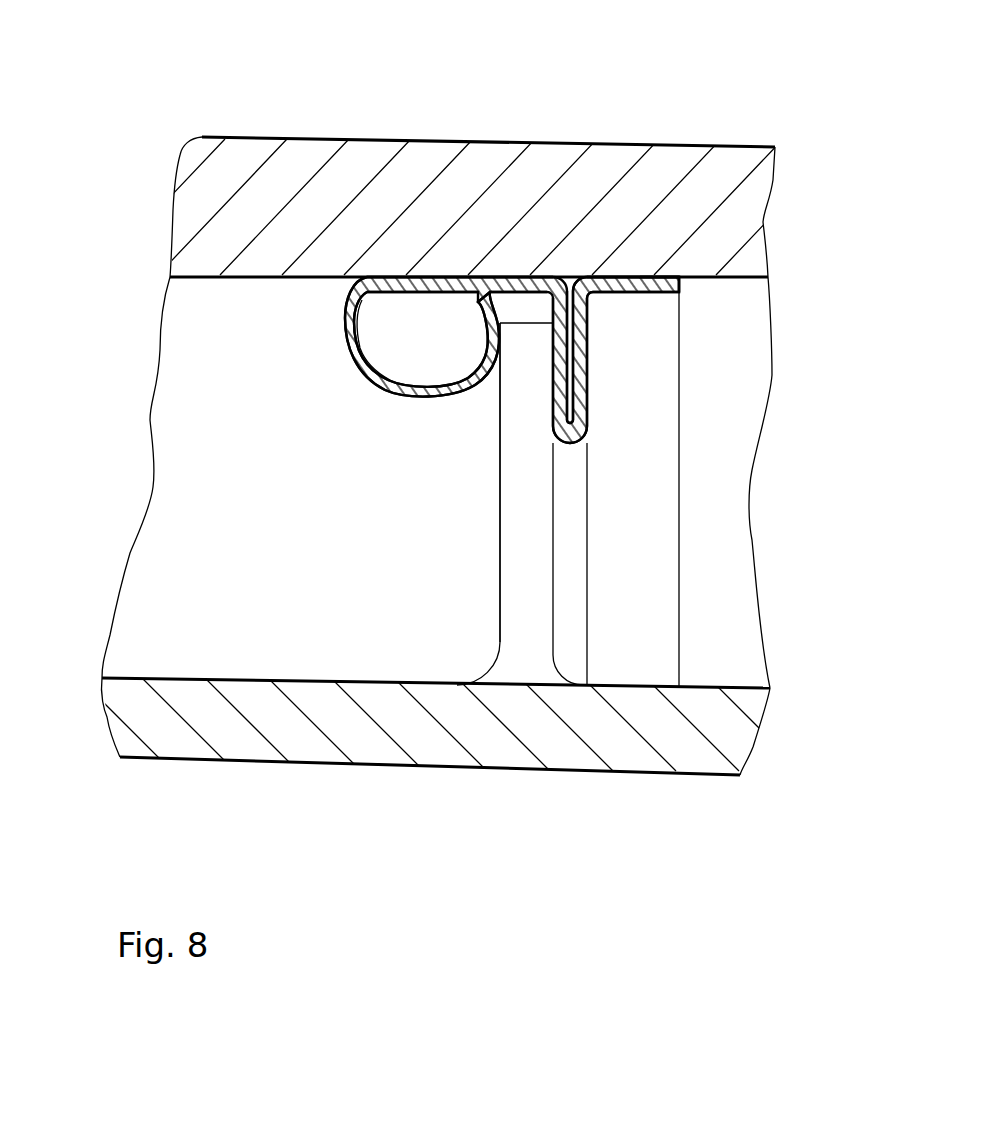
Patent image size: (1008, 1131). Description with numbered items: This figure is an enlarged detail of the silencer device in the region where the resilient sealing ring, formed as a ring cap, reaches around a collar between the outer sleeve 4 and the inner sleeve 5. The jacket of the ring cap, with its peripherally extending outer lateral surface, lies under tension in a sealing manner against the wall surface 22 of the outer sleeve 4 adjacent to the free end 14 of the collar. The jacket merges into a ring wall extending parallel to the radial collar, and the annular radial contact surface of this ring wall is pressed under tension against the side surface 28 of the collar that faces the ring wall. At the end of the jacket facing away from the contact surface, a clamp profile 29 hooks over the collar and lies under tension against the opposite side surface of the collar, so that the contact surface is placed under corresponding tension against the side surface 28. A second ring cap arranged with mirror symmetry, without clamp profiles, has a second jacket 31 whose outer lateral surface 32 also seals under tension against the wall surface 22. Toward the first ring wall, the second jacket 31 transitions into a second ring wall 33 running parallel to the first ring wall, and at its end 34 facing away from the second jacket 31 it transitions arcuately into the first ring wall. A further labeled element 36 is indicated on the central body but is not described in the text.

The outer sleeve 4 is at (290, 168).
The inner sleeve 5 is at (468, 728).
The free end 14 is at (540, 387).
The wall surface 22 is at (248, 300).
The side surface 28 is at (573, 466).
The clamp profile 29 is at (345, 330).
The second jacket 31 is at (632, 278).
The outer lateral surface 32 is at (665, 278).
The second ring wall 33 is at (580, 355).
The end 34 is at (583, 418).
The web surface 36 is at (477, 455).